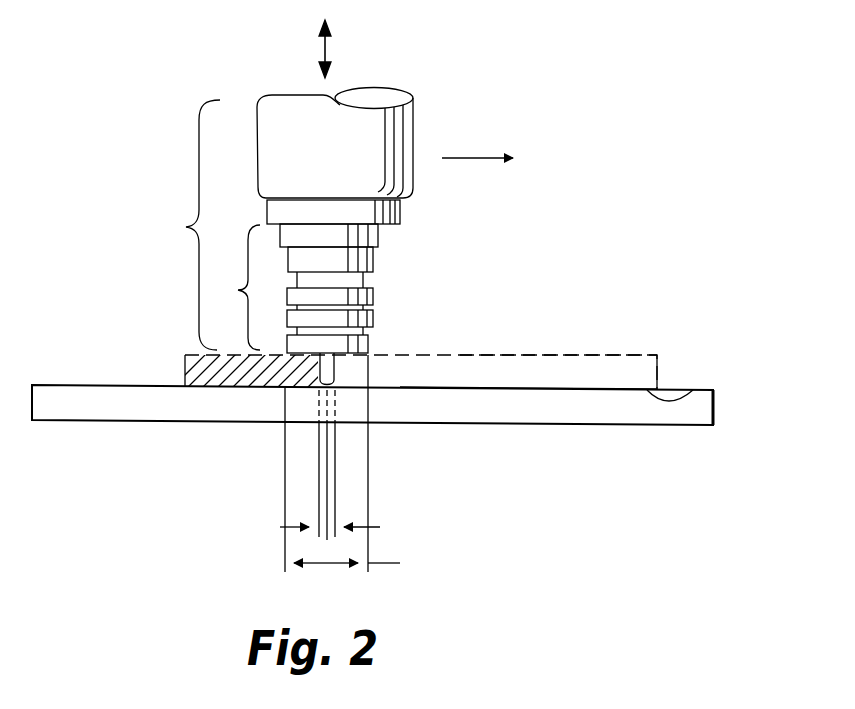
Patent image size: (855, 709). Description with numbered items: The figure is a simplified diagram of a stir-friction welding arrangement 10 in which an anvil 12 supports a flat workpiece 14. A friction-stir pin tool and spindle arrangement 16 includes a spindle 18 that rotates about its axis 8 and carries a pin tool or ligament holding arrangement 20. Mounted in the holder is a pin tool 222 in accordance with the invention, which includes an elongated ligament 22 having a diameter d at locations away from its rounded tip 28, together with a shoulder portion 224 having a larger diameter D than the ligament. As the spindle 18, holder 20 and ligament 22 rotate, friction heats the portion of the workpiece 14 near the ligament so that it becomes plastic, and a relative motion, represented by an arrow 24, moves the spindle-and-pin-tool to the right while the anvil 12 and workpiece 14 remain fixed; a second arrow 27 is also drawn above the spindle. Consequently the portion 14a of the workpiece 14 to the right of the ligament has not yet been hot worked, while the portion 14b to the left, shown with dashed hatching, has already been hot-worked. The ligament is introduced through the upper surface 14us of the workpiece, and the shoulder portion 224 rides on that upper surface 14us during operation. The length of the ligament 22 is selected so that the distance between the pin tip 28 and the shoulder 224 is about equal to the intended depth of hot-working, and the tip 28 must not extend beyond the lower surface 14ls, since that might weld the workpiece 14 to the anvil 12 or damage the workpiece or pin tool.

The axis of rotation 8 is at (327, 490).
The stir-friction welding arrangement 10 is at (212, 537).
The anvil 12 is at (88, 385).
The workpiece 14 is at (550, 339).
The portion of workpiece 14a is at (557, 390).
The portion of workpiece 14b is at (217, 388).
The upper surface 14us is at (650, 358).
The lower surface 14ls is at (693, 392).
The friction-stir pin tool and spindle arrangement 16 is at (188, 225).
The spindle 18 is at (413, 132).
The pin tool or ligament holding arrangement 20 is at (294, 288).
The ligament 22 is at (311, 410).
The arrow 24 is at (490, 160).
The vertical movement direction 27 is at (350, 49).
The tip 28 is at (416, 374).
The pin tool 222 is at (522, 313).
The shoulder portion 224 is at (366, 357).
The diameter d is at (340, 527).
The diameter D is at (353, 468).